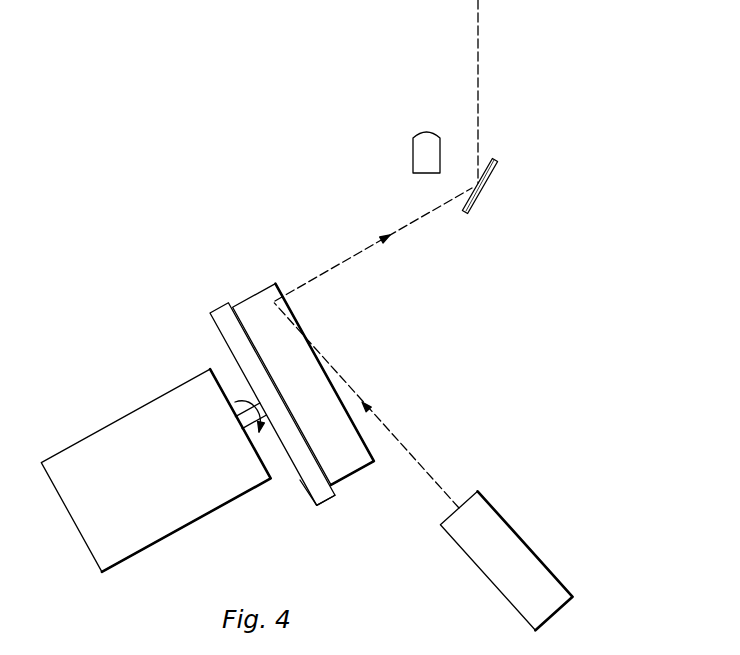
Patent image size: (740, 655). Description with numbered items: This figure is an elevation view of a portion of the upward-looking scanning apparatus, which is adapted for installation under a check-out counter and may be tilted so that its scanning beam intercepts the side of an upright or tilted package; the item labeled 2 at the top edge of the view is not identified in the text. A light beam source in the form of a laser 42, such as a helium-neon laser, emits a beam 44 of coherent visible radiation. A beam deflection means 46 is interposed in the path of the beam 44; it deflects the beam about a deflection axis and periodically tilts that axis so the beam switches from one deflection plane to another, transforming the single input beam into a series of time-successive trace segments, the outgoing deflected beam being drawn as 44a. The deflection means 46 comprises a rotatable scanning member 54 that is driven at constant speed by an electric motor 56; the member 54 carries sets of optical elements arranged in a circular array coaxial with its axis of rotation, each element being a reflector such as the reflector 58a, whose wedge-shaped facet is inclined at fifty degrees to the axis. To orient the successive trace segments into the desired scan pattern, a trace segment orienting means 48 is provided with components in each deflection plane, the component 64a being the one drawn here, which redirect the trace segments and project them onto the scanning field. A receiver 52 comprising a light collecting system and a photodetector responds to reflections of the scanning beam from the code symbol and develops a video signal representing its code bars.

The optical axis / apparatus 2 is at (562, 0).
The laser 42 is at (504, 536).
The light beam 44 is at (390, 431).
The reflected light beam 44a is at (371, 248).
The beam deflection means 46 is at (200, 326).
The trace segment orienting means 48 is at (512, 153).
The receiver 52 is at (414, 160).
The rotatable scanning member 54 is at (305, 485).
The electric motor 56 is at (96, 443).
The reflector 58a is at (259, 309).
The mirror 64a is at (472, 207).